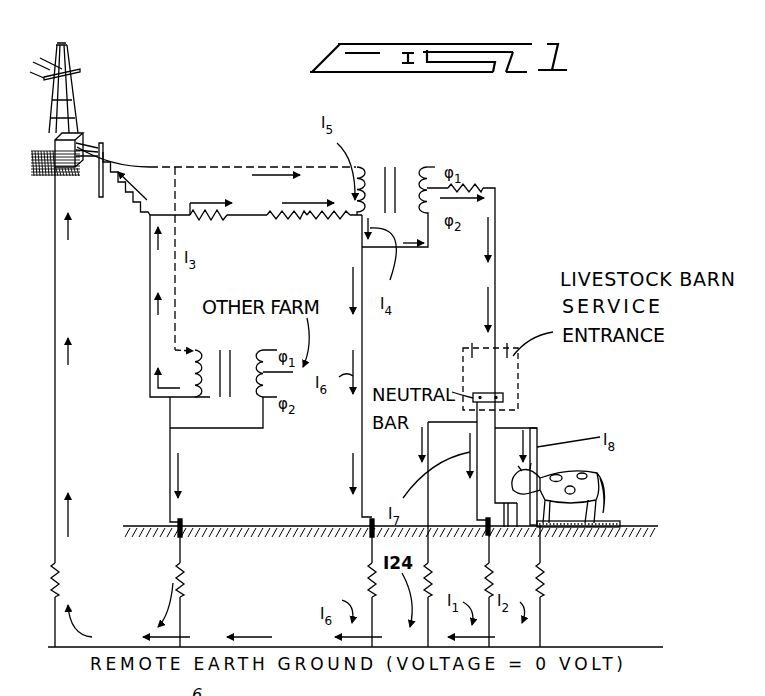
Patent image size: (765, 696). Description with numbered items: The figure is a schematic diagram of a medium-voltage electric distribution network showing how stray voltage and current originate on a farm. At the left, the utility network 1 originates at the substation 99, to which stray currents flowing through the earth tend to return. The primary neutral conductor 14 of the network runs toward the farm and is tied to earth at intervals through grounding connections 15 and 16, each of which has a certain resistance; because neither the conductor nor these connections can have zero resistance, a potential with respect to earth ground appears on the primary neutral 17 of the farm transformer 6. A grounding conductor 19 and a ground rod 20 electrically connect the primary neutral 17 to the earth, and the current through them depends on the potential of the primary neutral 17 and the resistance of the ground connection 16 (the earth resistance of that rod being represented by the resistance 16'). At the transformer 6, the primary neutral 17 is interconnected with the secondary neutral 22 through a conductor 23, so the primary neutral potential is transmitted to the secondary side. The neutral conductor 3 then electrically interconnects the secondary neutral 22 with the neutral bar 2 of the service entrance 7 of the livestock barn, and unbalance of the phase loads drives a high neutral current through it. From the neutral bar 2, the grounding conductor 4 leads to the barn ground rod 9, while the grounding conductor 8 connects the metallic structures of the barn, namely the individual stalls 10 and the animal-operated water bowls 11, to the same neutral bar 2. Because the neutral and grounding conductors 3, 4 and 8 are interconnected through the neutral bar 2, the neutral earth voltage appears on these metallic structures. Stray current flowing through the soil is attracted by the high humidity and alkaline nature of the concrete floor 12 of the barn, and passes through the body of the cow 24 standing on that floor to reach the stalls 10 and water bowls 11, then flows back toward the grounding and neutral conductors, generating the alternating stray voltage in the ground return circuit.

The substation 99 is at (67, 56).
The utility network 1 is at (103, 136).
The primary neutral conductor 14 is at (243, 213).
The grounding connection 15 is at (253, 215).
The grounding connection 16 is at (300, 231).
The primary neutral 17 is at (360, 218).
The farm transformer 6 is at (393, 170).
The secondary neutral 22 is at (425, 210).
The neutral conductor 3 is at (498, 258).
The conductor 23 is at (413, 248).
The grounding conductor 19 is at (362, 428).
The ground rod 20 is at (368, 525).
The earth resistance 16' is at (337, 588).
The service entrance 7 is at (518, 378).
The neutral bar 2 is at (517, 394).
The grounding conductor 8 is at (497, 420).
The grounding conductor 4 is at (477, 488).
The ground rod 9 is at (488, 533).
The water bowl 11 is at (505, 528).
The stall 10 is at (542, 524).
The concrete floor 12 is at (617, 528).
The cow 24 is at (600, 487).